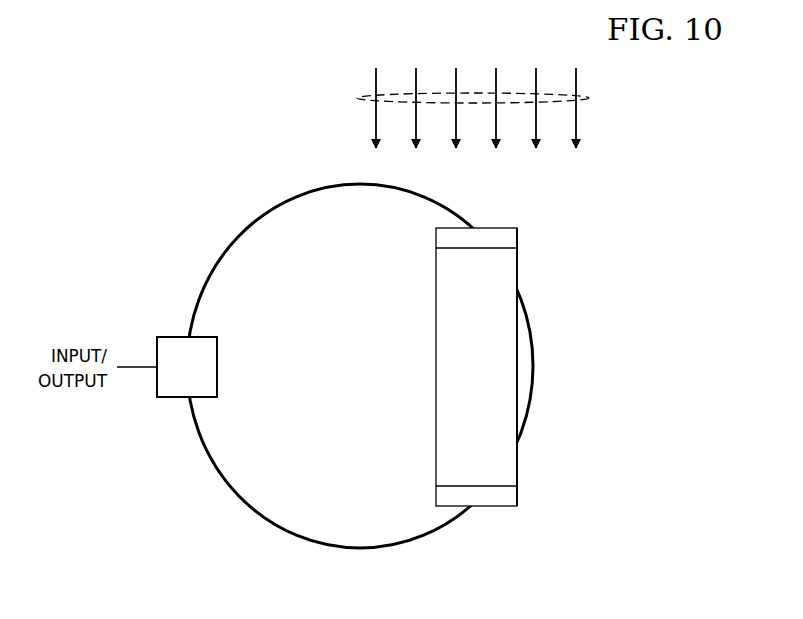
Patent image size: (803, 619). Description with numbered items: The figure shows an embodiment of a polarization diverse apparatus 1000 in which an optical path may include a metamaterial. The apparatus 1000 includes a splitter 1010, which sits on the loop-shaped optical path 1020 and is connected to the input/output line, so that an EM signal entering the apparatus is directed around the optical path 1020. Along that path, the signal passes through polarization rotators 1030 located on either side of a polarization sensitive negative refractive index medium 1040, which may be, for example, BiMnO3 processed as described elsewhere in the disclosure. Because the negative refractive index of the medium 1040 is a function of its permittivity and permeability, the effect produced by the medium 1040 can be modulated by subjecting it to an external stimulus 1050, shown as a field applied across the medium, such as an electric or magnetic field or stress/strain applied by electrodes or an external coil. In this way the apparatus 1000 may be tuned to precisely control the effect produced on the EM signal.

The polarization diverse apparatus 1000 is at (207, 113).
The splitter 1010 is at (168, 337).
The optical path 1020 is at (348, 184).
The polarization rotators 1030 is at (518, 235).
The polarization sensitive negative RI medium 1040 is at (518, 366).
The external stimulus 1050 is at (592, 100).